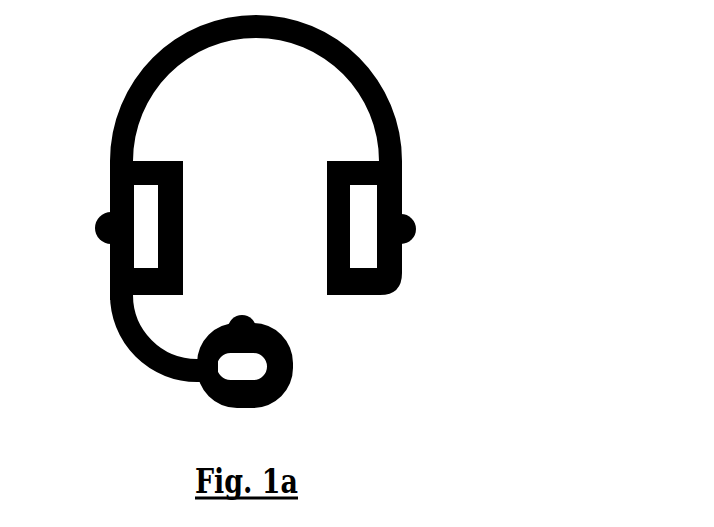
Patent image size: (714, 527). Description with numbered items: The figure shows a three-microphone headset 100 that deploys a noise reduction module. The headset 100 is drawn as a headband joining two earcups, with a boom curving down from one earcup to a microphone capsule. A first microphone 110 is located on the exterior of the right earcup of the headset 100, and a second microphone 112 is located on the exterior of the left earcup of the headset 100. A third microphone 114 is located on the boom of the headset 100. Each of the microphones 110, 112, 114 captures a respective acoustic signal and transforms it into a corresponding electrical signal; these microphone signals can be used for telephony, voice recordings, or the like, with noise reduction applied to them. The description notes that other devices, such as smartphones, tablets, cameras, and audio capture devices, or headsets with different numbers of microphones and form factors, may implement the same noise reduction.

The headset 100 is at (505, 77).
The microphone 110 is at (93, 210).
The microphone 112 is at (411, 206).
The microphone 114 is at (263, 317).